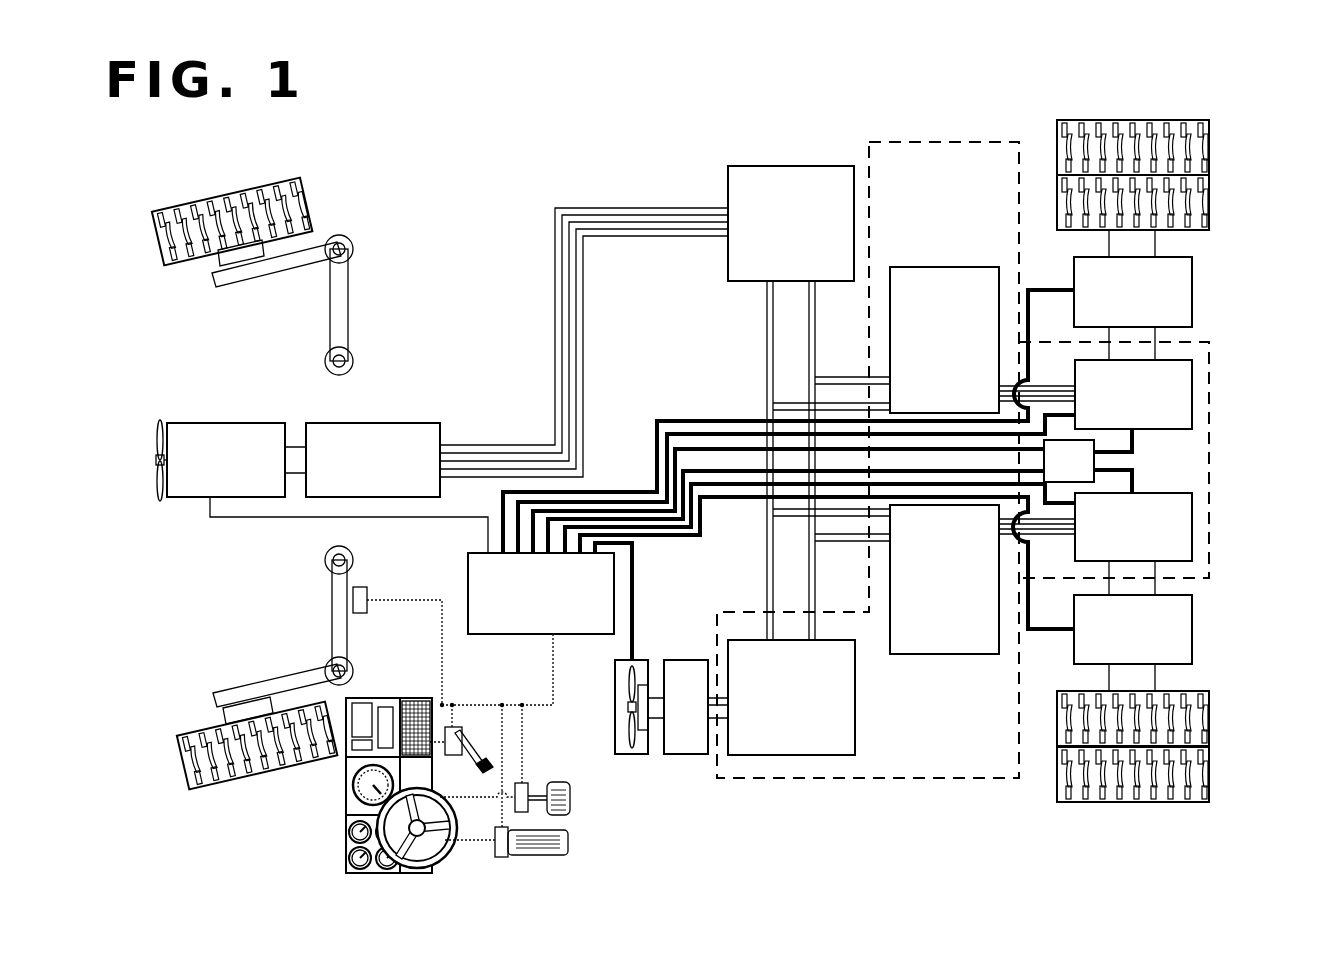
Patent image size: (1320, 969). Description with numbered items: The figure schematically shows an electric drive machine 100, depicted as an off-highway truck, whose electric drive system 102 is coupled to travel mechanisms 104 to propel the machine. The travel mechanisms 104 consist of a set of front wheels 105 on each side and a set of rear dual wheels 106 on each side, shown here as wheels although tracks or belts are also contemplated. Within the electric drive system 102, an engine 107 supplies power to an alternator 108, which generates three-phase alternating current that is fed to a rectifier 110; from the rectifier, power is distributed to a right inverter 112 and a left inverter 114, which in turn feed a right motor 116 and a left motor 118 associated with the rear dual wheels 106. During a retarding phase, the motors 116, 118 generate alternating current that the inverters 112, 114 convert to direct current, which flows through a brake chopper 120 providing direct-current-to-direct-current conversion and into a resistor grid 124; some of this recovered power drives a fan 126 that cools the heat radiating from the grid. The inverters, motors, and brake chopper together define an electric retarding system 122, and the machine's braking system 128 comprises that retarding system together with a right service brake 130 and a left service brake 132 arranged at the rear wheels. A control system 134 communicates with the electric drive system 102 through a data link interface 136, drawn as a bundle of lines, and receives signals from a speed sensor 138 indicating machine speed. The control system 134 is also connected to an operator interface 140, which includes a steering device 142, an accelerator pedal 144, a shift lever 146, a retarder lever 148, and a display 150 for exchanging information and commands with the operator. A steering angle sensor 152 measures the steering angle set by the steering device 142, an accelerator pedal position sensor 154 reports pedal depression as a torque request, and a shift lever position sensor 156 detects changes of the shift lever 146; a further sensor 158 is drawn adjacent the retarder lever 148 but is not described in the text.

The machine 100 is at (697, 445).
The electric drive system 102 is at (192, 481).
The travel mechanisms 104 is at (697, 473).
The front wheels 105 is at (214, 196).
The rear dual wheels 106 is at (1210, 143).
The engine 107 is at (245, 500).
The alternator 108 is at (398, 423).
The rectifier 110 is at (818, 166).
The inverter 112 is at (944, 267).
The inverter 114 is at (952, 654).
The right motor 116 is at (1192, 406).
The left motor 118 is at (1192, 514).
The brake chopper 120 is at (805, 755).
The electric retarding system 122 is at (1216, 437).
The resistor grid 124 is at (695, 754).
The fan 126 is at (632, 754).
The braking system 128 is at (1179, 286).
The right service brake 130 is at (1192, 300).
The left service brake 132 is at (1192, 631).
The control system 134 is at (460, 575).
The data link interface 136 is at (613, 480).
The speed sensor 138 is at (1088, 461).
The operator interface 140 is at (374, 742).
The steering device 142 is at (430, 866).
The accelerator pedal 144 is at (547, 855).
The shift lever 146 is at (476, 752).
The retarder lever 148 is at (558, 782).
The display 150 is at (362, 702).
The steering angle sensor 152 is at (360, 613).
The accelerator pedal position sensor 154 is at (500, 857).
The shift lever position sensor 156 is at (456, 727).
The brake sensor 158 is at (528, 783).